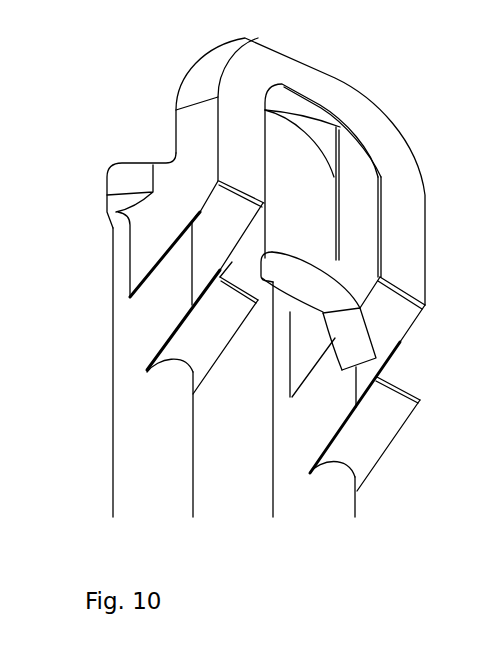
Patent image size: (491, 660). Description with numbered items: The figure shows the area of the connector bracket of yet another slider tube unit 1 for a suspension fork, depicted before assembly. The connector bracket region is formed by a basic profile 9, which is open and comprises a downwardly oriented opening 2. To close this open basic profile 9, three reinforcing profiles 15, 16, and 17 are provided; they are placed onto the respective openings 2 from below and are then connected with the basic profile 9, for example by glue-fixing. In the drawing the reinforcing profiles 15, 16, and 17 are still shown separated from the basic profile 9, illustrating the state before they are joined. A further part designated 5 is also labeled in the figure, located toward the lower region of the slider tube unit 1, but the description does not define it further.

The slider tube unit 1 is at (97, 50).
The basic profile 9 is at (198, 126).
The opening 2 is at (312, 120).
The reinforcing profile 15 is at (190, 343).
The reinforcing profile 16 is at (298, 285).
The reinforcing profile 17 is at (377, 422).
The leg 5 is at (235, 500).